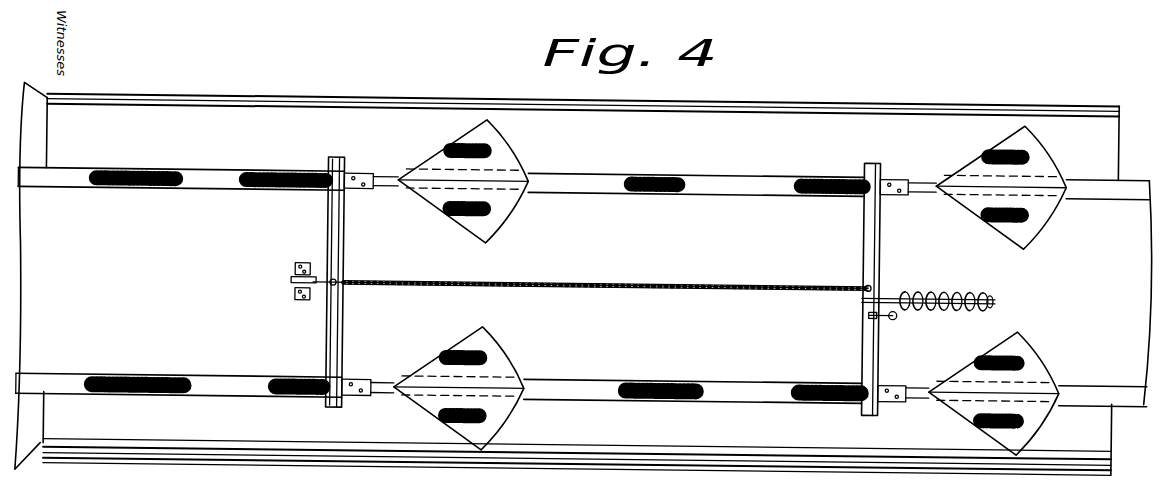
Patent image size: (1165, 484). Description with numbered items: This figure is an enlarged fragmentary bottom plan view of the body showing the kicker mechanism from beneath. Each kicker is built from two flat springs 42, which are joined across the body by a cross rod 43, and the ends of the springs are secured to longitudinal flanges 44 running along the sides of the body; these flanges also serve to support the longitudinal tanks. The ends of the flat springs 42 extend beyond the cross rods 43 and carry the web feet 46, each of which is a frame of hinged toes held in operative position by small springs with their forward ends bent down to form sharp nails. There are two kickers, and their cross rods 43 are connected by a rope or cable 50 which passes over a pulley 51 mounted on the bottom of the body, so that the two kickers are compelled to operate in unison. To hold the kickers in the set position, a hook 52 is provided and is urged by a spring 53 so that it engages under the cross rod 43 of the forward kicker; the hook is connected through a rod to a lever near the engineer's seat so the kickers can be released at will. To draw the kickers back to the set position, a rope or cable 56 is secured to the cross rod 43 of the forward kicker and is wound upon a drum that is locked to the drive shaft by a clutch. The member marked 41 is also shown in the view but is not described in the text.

The post 41 is at (345, 318).
The flat springs 42 is at (762, 408).
The cross rod 43 is at (916, 218).
The longitudinal flanges 44 is at (598, 178).
The web feet 46 is at (1058, 423).
The rope or cable 50 is at (592, 298).
The pulley 51 is at (295, 279).
The hook 52 is at (862, 297).
The spring 53 is at (947, 285).
The rope or cable 56 is at (880, 315).